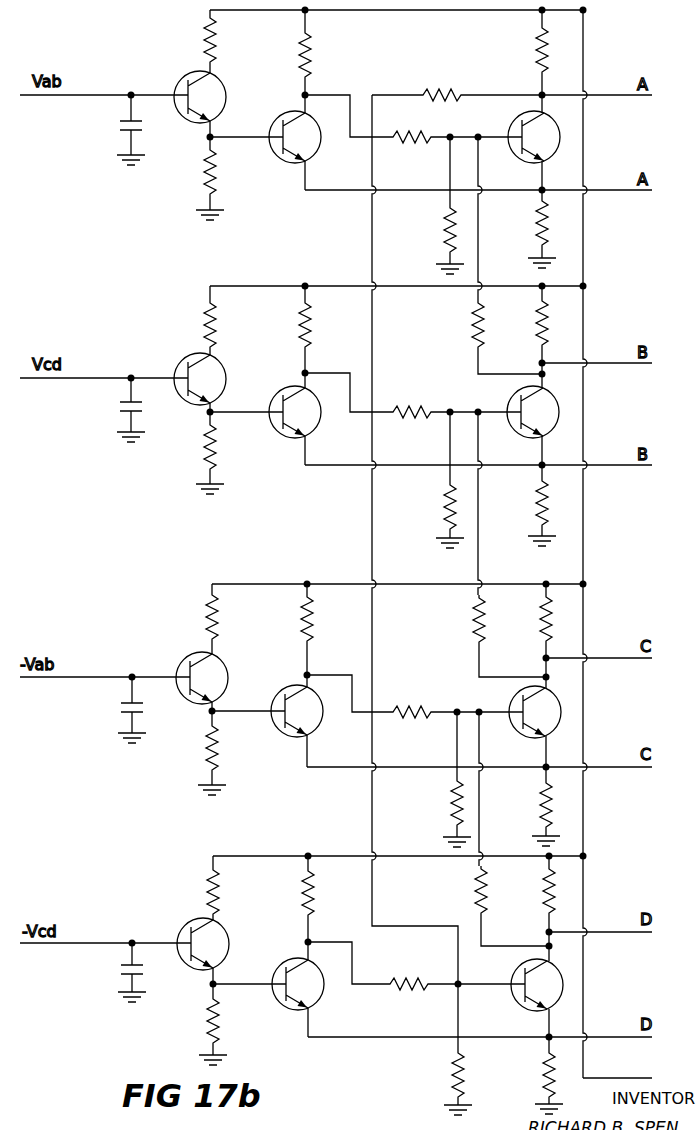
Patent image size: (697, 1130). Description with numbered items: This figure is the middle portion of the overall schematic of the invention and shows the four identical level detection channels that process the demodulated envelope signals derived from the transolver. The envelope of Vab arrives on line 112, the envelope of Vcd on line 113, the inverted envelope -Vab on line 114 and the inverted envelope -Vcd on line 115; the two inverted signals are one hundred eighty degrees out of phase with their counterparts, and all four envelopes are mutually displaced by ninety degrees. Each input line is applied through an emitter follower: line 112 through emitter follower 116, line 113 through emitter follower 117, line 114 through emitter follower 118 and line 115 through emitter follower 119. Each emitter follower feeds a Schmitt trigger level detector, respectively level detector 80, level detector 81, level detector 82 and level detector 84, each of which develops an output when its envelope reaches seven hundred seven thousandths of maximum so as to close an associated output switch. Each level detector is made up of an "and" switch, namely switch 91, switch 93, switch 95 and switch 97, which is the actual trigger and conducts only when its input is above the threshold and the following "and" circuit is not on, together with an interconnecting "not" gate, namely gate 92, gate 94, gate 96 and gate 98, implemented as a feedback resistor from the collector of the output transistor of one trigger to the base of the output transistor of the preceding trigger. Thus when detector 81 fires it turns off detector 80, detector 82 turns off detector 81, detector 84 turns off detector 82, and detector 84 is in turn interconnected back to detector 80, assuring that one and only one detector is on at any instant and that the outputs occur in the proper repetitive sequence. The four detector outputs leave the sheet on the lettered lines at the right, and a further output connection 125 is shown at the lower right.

The level detector 80 is at (512, 142).
The level detector 81 is at (529, 417).
The level detector 82 is at (529, 715).
The level detector 84 is at (521, 985).
The "and" switch 91 is at (501, 128).
The "not" gate 92 is at (475, 332).
The "and" switch 93 is at (500, 400).
The "not" gate 94 is at (476, 632).
The "and" switch 95 is at (503, 700).
The "not" gate 96 is at (487, 893).
The "and" switch 97 is at (508, 976).
The "not" gate 98 is at (452, 95).
The line 112 is at (73, 95).
The line 113 is at (80, 378).
The line 114 is at (78, 677).
The line 115 is at (75, 943).
The emitter follower 116 is at (175, 66).
The emitter follower 117 is at (173, 334).
The emitter follower 118 is at (183, 627).
The emitter follower 119 is at (172, 897).
The output line 125 is at (640, 1078).